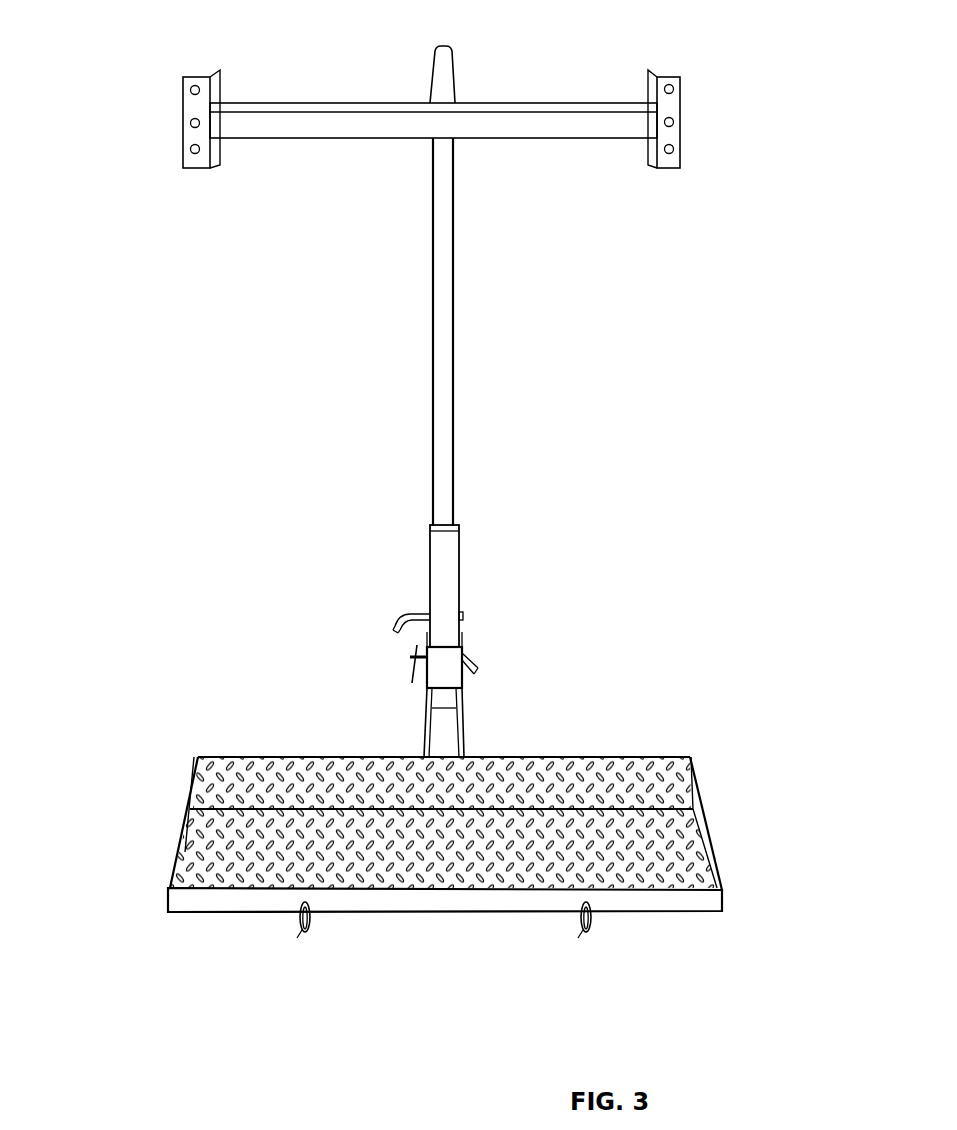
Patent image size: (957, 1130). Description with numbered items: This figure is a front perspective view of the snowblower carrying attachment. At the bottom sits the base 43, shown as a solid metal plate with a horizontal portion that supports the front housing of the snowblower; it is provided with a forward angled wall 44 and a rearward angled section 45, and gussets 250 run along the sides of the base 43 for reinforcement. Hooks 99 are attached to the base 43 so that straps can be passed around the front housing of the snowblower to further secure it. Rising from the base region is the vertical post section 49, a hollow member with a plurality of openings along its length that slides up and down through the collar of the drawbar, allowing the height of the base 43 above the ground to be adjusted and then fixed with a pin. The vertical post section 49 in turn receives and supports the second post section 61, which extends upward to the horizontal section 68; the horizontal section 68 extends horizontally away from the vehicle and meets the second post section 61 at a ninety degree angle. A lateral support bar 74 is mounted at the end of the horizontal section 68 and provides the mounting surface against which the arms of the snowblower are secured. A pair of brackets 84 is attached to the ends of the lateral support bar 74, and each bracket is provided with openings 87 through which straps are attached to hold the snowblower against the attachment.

The lateral support bar 74 is at (298, 122).
The horizontal section 68 is at (443, 65).
The brackets 84 is at (190, 107).
The openings 87 is at (193, 148).
The second post section 61 is at (442, 320).
The vertical post section 49 is at (442, 573).
The gussets 250 is at (198, 808).
The forward angled wall 44 is at (617, 767).
The base 43 is at (688, 832).
The rearward angled section 45 is at (667, 907).
The hooks 99 is at (303, 935).